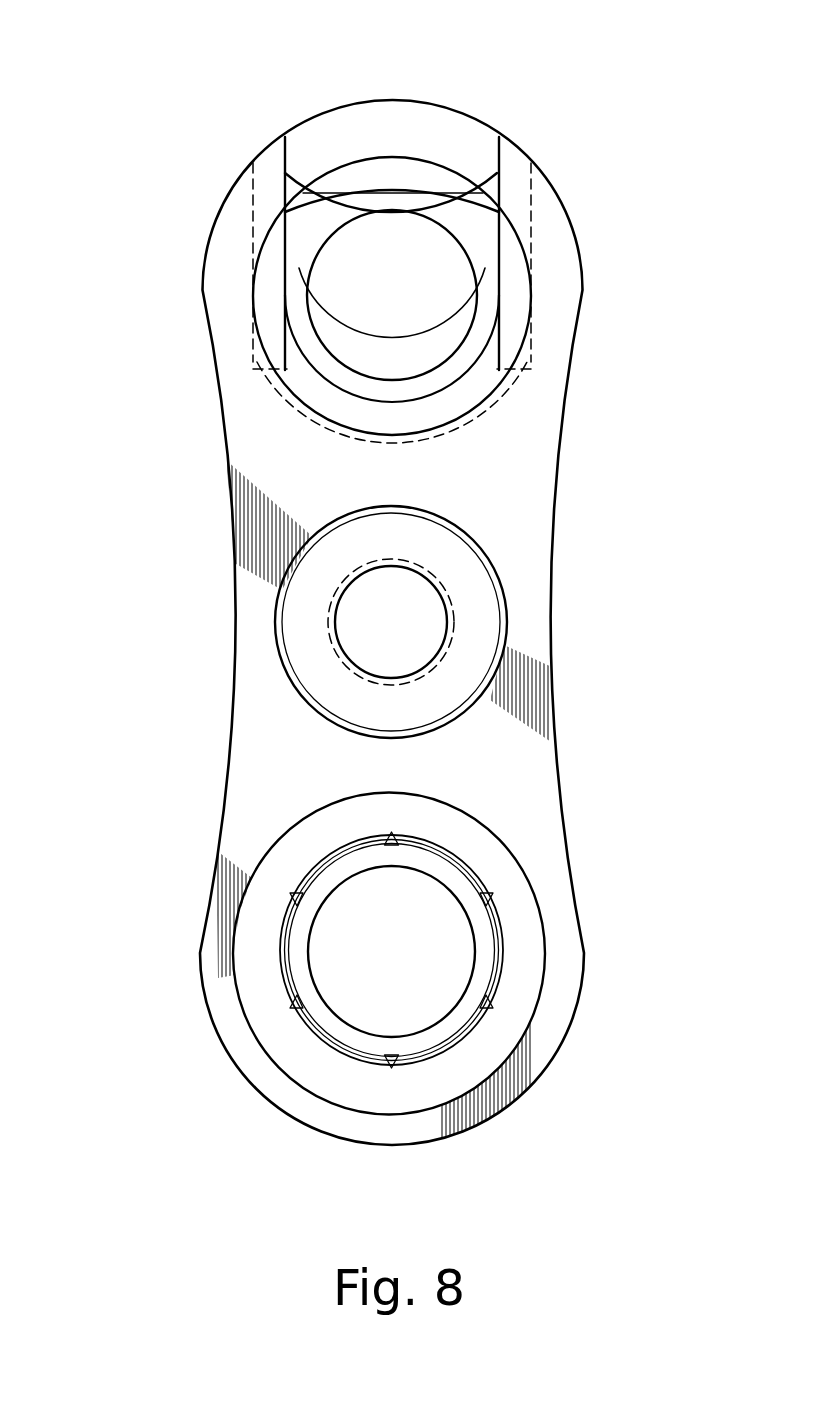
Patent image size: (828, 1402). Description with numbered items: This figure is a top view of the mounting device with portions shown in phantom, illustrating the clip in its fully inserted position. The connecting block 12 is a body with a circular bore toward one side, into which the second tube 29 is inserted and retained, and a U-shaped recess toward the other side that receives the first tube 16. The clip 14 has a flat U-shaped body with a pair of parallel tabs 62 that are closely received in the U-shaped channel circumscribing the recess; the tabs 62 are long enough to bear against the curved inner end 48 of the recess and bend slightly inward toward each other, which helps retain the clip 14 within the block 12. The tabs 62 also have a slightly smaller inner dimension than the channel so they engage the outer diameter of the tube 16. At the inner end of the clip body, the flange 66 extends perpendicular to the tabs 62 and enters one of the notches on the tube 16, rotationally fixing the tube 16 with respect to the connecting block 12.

The connecting block 12 is at (212, 716).
The clip 14 is at (574, 93).
The first tube 16 is at (487, 273).
The second tube 29 is at (492, 945).
The curved inner end 48 is at (400, 442).
The tabs 62 is at (273, 300).
The flange 66 is at (392, 196).